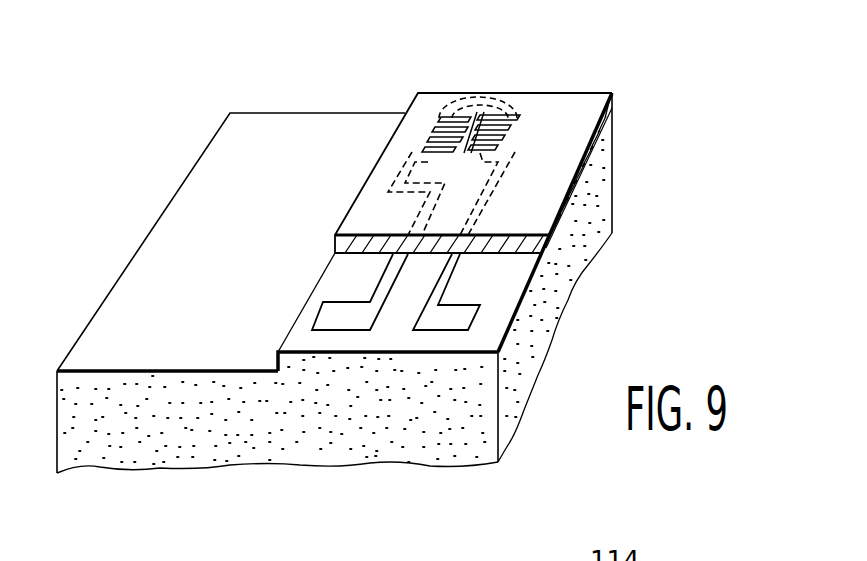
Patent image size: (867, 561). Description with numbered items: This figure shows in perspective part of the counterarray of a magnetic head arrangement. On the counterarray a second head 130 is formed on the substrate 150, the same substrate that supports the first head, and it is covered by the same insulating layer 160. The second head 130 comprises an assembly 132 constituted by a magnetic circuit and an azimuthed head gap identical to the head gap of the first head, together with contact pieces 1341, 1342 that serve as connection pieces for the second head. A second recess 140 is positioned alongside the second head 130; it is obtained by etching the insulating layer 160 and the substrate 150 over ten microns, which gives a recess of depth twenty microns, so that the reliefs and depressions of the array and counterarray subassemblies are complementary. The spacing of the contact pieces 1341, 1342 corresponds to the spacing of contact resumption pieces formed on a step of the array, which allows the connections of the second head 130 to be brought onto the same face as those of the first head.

The second head 130 is at (430, 107).
The assembly 132 is at (523, 122).
The second recess 140 is at (163, 233).
The substrate 150 is at (582, 253).
The insulating layer 160 is at (598, 128).
The contact piece 1341 is at (348, 325).
The contact piece 1342 is at (445, 320).